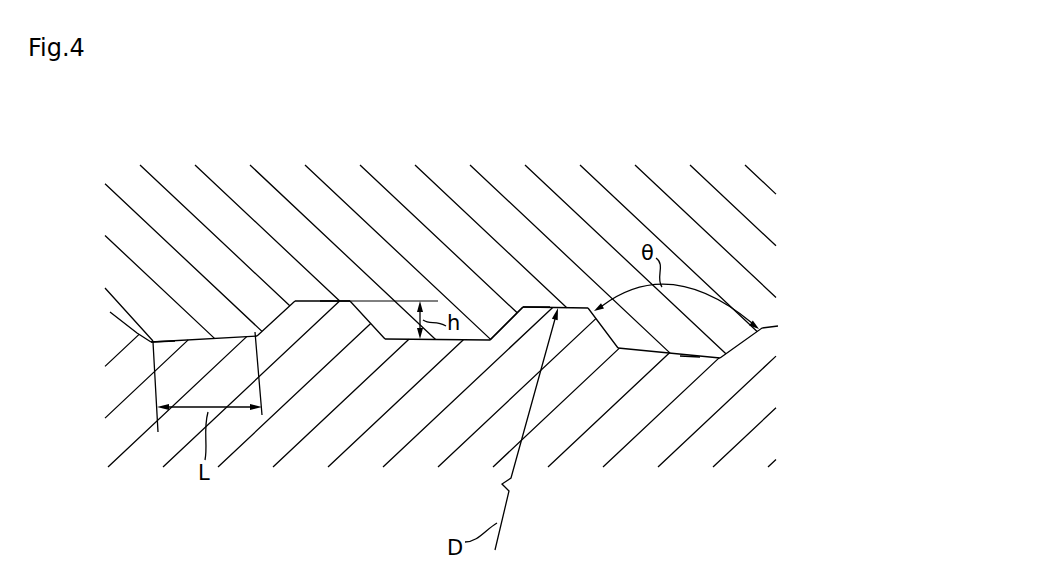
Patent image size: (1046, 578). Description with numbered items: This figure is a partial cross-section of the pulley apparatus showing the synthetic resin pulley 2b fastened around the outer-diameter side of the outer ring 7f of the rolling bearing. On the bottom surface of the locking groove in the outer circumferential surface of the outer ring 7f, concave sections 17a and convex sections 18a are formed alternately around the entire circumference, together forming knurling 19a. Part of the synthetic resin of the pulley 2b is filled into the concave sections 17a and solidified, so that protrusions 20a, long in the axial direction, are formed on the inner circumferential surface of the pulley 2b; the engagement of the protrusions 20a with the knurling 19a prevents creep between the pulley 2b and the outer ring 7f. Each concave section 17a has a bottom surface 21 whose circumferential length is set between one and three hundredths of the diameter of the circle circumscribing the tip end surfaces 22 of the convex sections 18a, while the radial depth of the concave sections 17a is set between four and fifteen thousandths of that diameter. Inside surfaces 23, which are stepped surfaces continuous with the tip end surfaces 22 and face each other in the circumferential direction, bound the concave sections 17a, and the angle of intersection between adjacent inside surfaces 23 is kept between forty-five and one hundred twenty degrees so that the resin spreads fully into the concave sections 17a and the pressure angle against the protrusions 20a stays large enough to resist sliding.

The pulley 2b is at (744, 222).
The outer ring 7f is at (793, 429).
The concave sections 17a is at (236, 341).
The convex sections 18a is at (300, 308).
The knurling 19a is at (768, 328).
The protrusions 20a is at (144, 324).
The bottom surfaces of the concave sections 21 is at (172, 344).
The tip end surfaces of the convex sections 22 is at (335, 300).
The inside surfaces 23 is at (369, 326).